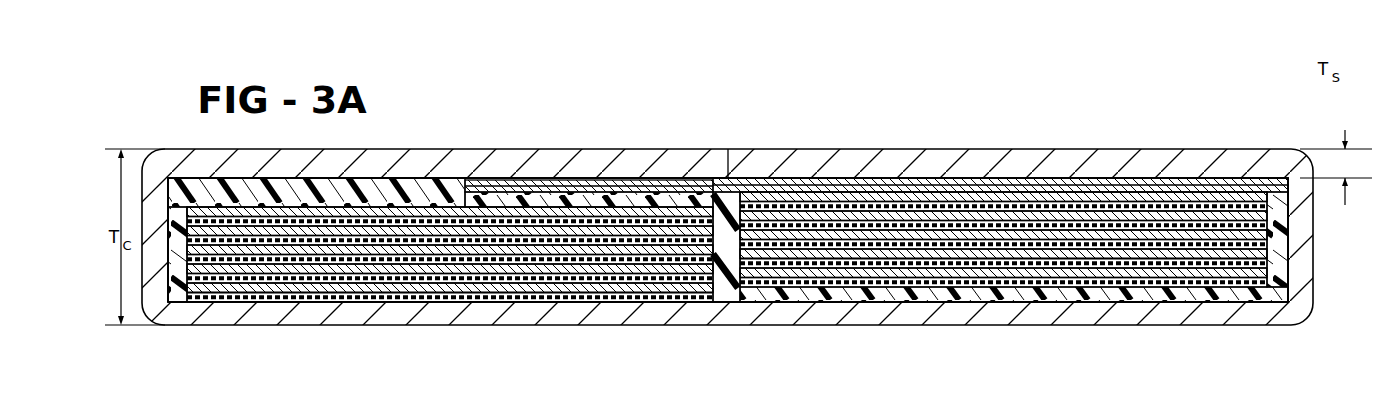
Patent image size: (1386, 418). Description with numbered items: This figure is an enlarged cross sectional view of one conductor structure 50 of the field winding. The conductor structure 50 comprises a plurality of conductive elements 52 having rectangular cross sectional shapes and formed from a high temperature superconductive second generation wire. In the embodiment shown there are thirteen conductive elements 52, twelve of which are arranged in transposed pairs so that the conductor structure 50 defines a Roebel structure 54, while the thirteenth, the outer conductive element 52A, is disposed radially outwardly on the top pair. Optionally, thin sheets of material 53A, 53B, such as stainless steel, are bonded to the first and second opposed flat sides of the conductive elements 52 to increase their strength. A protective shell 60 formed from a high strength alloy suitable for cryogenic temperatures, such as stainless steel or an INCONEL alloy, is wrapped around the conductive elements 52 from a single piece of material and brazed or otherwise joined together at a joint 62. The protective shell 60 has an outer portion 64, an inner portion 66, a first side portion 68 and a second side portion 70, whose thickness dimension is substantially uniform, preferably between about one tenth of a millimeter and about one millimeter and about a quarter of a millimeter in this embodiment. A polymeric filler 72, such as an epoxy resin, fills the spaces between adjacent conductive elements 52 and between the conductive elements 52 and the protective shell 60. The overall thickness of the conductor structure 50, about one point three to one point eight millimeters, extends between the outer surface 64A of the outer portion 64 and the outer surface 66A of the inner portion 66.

The conductor structure 50 is at (990, 118).
The conductive elements 52 is at (980, 278).
The outer conductive element 52A is at (900, 185).
The thin sheet of material 53A is at (1012, 275).
The thin sheet of material 53B is at (1058, 262).
The Roebel structure 54 is at (445, 183).
The protective shell 60 is at (1237, 150).
The joint 62 is at (730, 165).
The outer portion 64 is at (605, 160).
The outer surface of the outer portion 64A is at (498, 150).
The inner portion 66 is at (590, 305).
The outer surface of the inner portion 66A is at (486, 308).
The first side portion 68 is at (150, 268).
The second side portion 70 is at (1300, 237).
The polymeric filler 72 is at (175, 278).